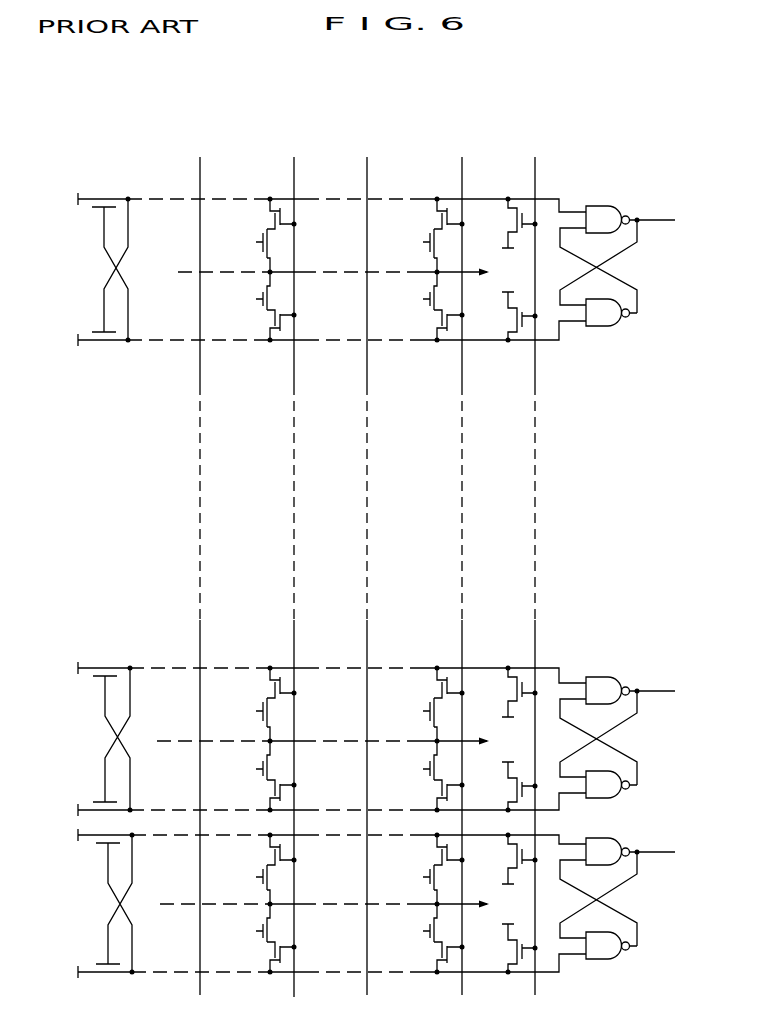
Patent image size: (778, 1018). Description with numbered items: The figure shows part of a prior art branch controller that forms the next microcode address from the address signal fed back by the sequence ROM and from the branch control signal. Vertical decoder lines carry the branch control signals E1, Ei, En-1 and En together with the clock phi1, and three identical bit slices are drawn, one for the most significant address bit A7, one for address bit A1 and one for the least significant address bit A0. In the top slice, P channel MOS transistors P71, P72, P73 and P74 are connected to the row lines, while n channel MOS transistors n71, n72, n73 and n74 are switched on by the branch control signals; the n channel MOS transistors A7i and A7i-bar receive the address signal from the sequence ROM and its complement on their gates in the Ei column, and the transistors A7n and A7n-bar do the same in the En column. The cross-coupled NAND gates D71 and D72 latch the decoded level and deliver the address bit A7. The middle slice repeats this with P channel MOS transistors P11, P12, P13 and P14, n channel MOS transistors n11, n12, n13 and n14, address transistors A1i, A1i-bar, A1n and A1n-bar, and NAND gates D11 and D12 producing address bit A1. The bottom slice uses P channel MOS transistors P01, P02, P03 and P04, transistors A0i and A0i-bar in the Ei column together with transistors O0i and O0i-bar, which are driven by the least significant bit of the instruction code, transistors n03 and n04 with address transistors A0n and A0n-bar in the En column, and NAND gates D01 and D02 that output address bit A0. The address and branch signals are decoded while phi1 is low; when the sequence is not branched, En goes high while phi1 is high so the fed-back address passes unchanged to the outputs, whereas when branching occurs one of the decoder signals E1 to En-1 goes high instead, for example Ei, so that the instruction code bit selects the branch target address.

The branch control signal E1 is at (196, 565).
The branch control signal Ei is at (290, 566).
The branch control signal En-1 is at (365, 565).
The branch control signal En is at (458, 565).
The clock signal phi1 is at (529, 565).
The P channel MOS transistor P71 is at (104, 259).
The P channel MOS transistor P72 is at (104, 347).
The n channel MOS transistor n71 is at (284, 212).
The n channel MOS transistor n72 is at (284, 313).
The n channel MOS transistor A7i is at (261, 235).
The n channel MOS transistor A7i-bar is at (262, 289).
The n channel MOS transistor n73 is at (434, 212).
The n channel MOS transistor n74 is at (434, 314).
The n channel MOS transistor A7n is at (432, 235).
The n channel MOS transistor A7n-bar is at (431, 289).
The P channel MOS transistor P73 is at (507, 223).
The P channel MOS transistor P74 is at (507, 316).
The NAND gate D71 is at (598, 244).
The NAND gate D72 is at (598, 290).
The address signal A7 is at (653, 211).
The P channel MOS transistor P11 is at (106, 728).
The P channel MOS transistor P12 is at (105, 799).
The n channel MOS transistor n11 is at (284, 681).
The n channel MOS transistor n12 is at (284, 783).
The n channel MOS transistor A1i is at (265, 704).
The n channel MOS transistor A1i-bar is at (264, 758).
The n channel MOS transistor n13 is at (434, 681).
The n channel MOS transistor n14 is at (434, 783).
The n channel MOS transistor A1n is at (433, 704).
The n channel MOS transistor A1n-bar is at (431, 758).
The P channel MOS transistor P13 is at (507, 692).
The P channel MOS transistor P14 is at (507, 786).
The NAND gate D11 is at (598, 714).
The NAND gate D12 is at (598, 760).
The address signal A1 is at (653, 683).
The P channel MOS transistor P01 is at (103, 900).
The P channel MOS transistor P02 is at (106, 983).
The n channel MOS transistor A0i is at (284, 850).
The n channel MOS transistor O0i is at (265, 870).
The n channel MOS transistor O0i-bar is at (262, 924).
The n channel MOS transistor A0i-bar is at (284, 957).
The n channel MOS transistor n03 is at (434, 851).
The n channel MOS transistor n04 is at (434, 958).
The n channel MOS transistor A0n is at (432, 870).
The n channel MOS transistor A0n-bar is at (431, 924).
The P channel MOS transistor P03 is at (507, 859).
The P channel MOS transistor P04 is at (507, 948).
The NAND gate D01 is at (606, 881).
The NAND gate D02 is at (598, 925).
The address signal A0 is at (654, 846).